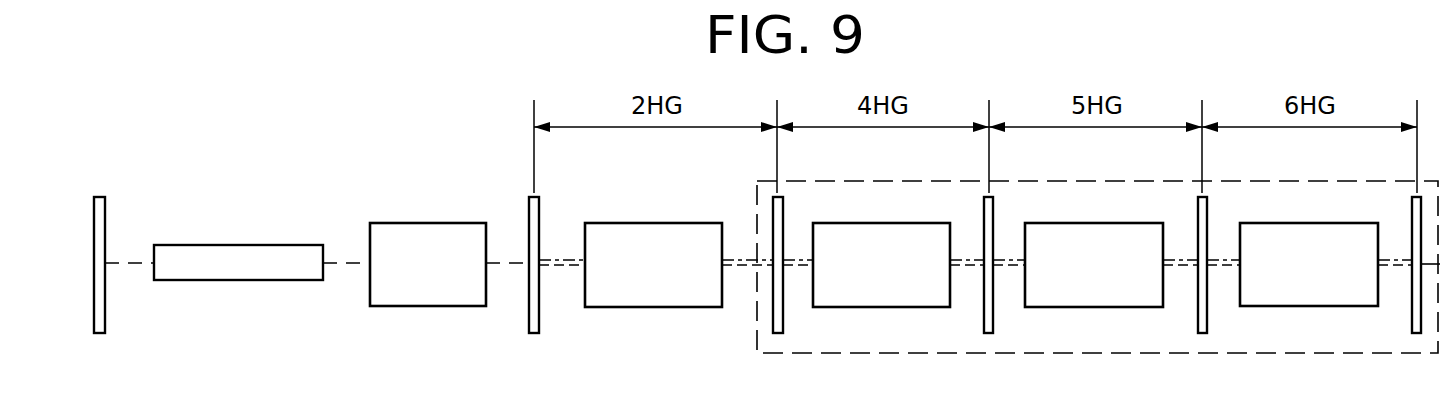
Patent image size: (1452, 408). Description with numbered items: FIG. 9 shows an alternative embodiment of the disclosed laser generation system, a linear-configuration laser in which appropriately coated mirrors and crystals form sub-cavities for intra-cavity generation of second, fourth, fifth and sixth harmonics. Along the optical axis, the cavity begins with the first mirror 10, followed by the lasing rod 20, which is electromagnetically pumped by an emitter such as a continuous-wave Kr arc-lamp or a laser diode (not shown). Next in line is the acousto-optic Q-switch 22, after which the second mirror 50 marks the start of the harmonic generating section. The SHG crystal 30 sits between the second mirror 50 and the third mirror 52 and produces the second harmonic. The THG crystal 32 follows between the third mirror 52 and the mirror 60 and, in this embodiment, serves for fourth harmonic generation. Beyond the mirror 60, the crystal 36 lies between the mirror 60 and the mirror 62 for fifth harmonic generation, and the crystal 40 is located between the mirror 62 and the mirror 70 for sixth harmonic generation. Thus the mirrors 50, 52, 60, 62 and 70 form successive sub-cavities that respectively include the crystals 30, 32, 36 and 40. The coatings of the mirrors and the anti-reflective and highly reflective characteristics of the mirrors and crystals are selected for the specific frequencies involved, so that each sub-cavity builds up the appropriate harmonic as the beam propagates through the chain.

The first mirror 10 is at (102, 220).
The lasing rod 20 is at (262, 253).
The acousto-optic Q-switch 22 is at (402, 228).
The second mirror 50 is at (542, 210).
The SHG crystal 30 is at (657, 298).
The third mirror 52 is at (782, 212).
The THG crystal 32 is at (892, 303).
The mirror 60 is at (994, 218).
The crystal 36 is at (1118, 300).
The mirror 62 is at (1207, 213).
The crystal 40 is at (1315, 307).
The mirror 70 is at (1411, 217).